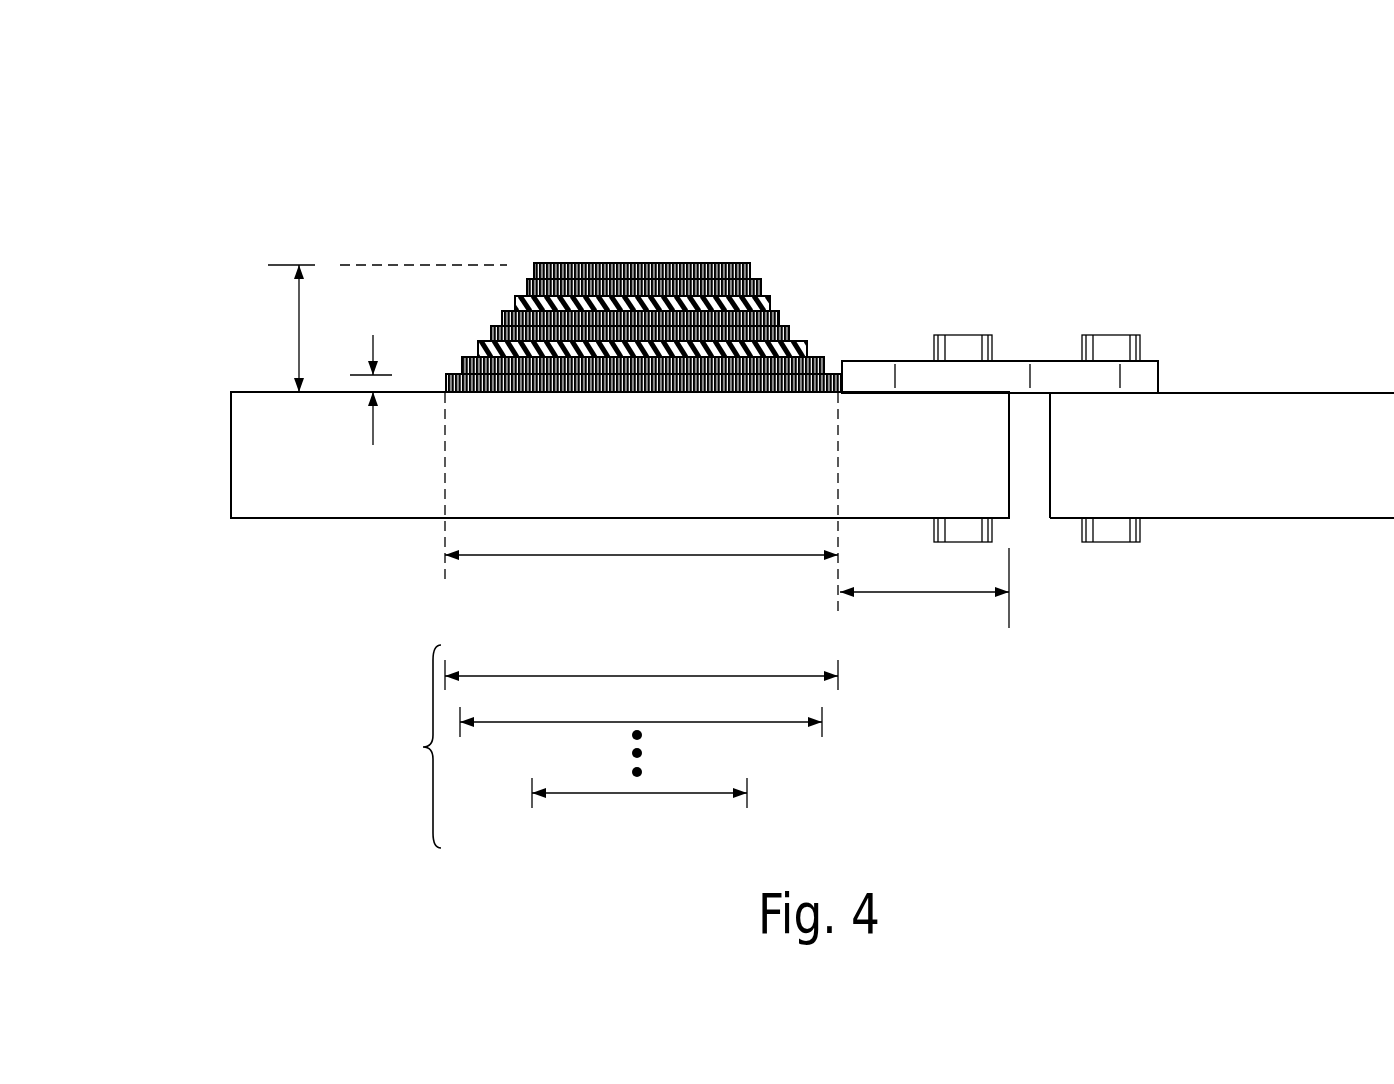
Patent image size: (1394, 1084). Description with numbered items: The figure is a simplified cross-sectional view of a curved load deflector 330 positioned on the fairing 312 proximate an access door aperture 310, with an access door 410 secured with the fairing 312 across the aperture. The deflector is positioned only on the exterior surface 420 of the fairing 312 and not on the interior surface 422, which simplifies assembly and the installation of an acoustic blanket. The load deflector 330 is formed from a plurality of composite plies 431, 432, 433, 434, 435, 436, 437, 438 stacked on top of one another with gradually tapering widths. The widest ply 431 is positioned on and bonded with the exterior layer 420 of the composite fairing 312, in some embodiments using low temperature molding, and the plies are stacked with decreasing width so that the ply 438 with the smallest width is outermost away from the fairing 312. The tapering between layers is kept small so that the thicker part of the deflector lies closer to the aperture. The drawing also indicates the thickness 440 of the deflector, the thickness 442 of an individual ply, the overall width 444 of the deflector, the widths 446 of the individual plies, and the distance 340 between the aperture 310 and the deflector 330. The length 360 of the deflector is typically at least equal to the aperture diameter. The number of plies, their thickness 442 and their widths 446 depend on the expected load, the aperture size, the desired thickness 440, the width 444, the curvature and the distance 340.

The access door aperture 310 is at (1022, 503).
The fairing 312 is at (225, 468).
The curved load deflector 330 is at (590, 241).
The distance between the aperture and the deflector 340 is at (908, 592).
The length of the load deflector 360 is at (1012, 360).
The access door 410 is at (1223, 393).
The exterior surface 420 is at (267, 392).
The interior surface 422 is at (260, 517).
The widest ply 431 is at (447, 375).
The composite ply 432 is at (462, 357).
The composite ply 433 is at (477, 342).
The composite ply 434 is at (490, 328).
The composite ply 435 is at (502, 312).
The composite ply 436 is at (513, 297).
The composite ply 437 is at (527, 280).
The ply with the smallest width 438 is at (550, 263).
The thickness of the deflector 440 is at (299, 322).
The thickness of the plies 442 is at (385, 381).
The width of the deflector 444 is at (603, 555).
The width of the plies 446 is at (604, 746).